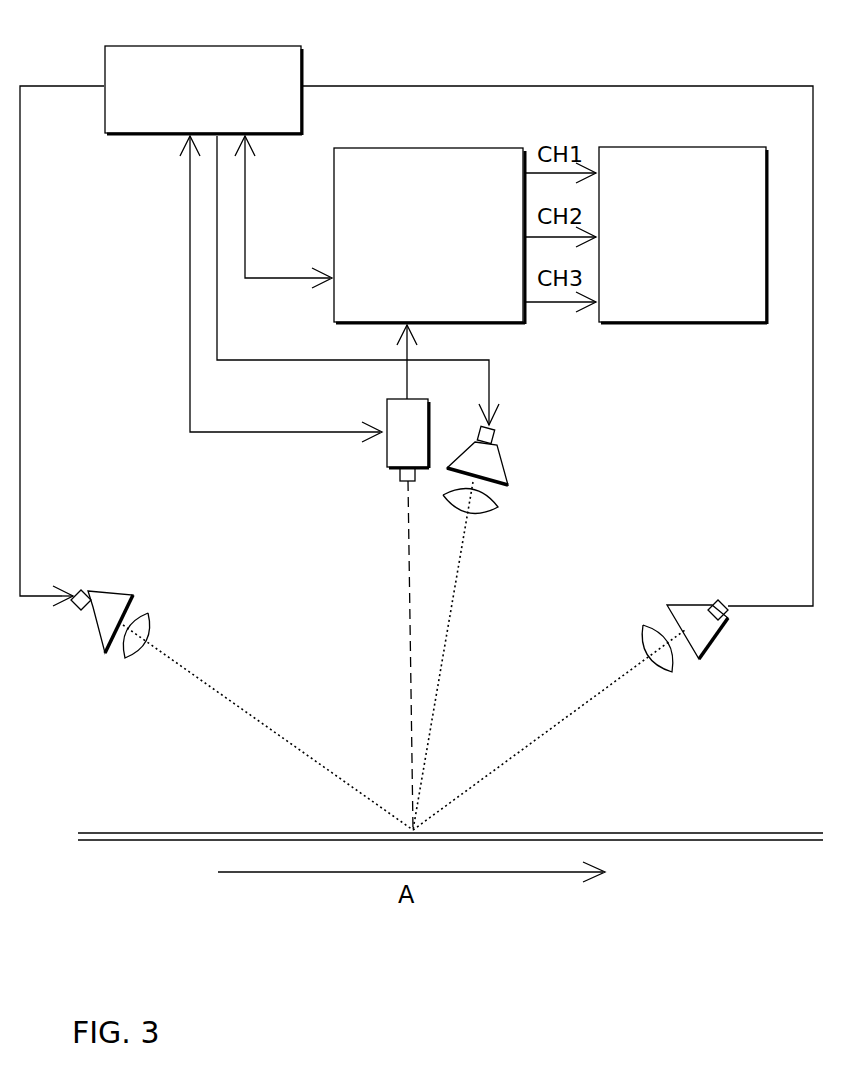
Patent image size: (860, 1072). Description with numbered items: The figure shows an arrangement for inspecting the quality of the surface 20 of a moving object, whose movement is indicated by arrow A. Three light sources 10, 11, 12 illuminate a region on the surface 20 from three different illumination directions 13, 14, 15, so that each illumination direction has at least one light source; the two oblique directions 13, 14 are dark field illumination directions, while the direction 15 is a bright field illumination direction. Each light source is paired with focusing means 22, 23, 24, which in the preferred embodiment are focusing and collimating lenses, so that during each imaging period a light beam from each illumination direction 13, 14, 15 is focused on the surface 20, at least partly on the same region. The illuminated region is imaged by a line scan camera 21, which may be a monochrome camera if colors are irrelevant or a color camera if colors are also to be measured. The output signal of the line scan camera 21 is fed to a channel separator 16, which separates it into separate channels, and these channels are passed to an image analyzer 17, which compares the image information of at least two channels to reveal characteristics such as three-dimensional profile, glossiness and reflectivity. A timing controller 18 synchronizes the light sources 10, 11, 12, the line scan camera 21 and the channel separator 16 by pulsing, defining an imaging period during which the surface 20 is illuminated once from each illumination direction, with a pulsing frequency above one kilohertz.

The light source 10 is at (107, 587).
The light source 11 is at (698, 595).
The light source 12 is at (505, 450).
The illumination direction 13 is at (217, 680).
The illumination direction 14 is at (528, 740).
The illumination direction 15 is at (465, 565).
The channel separator 16 is at (413, 140).
The image analyzer 17 is at (660, 142).
The timing controller 18 is at (145, 42).
The surface 20 is at (768, 828).
The line scan camera 21 is at (433, 420).
The focusing means 22 is at (150, 605).
The focusing means 23 is at (677, 675).
The focusing means 24 is at (507, 510).